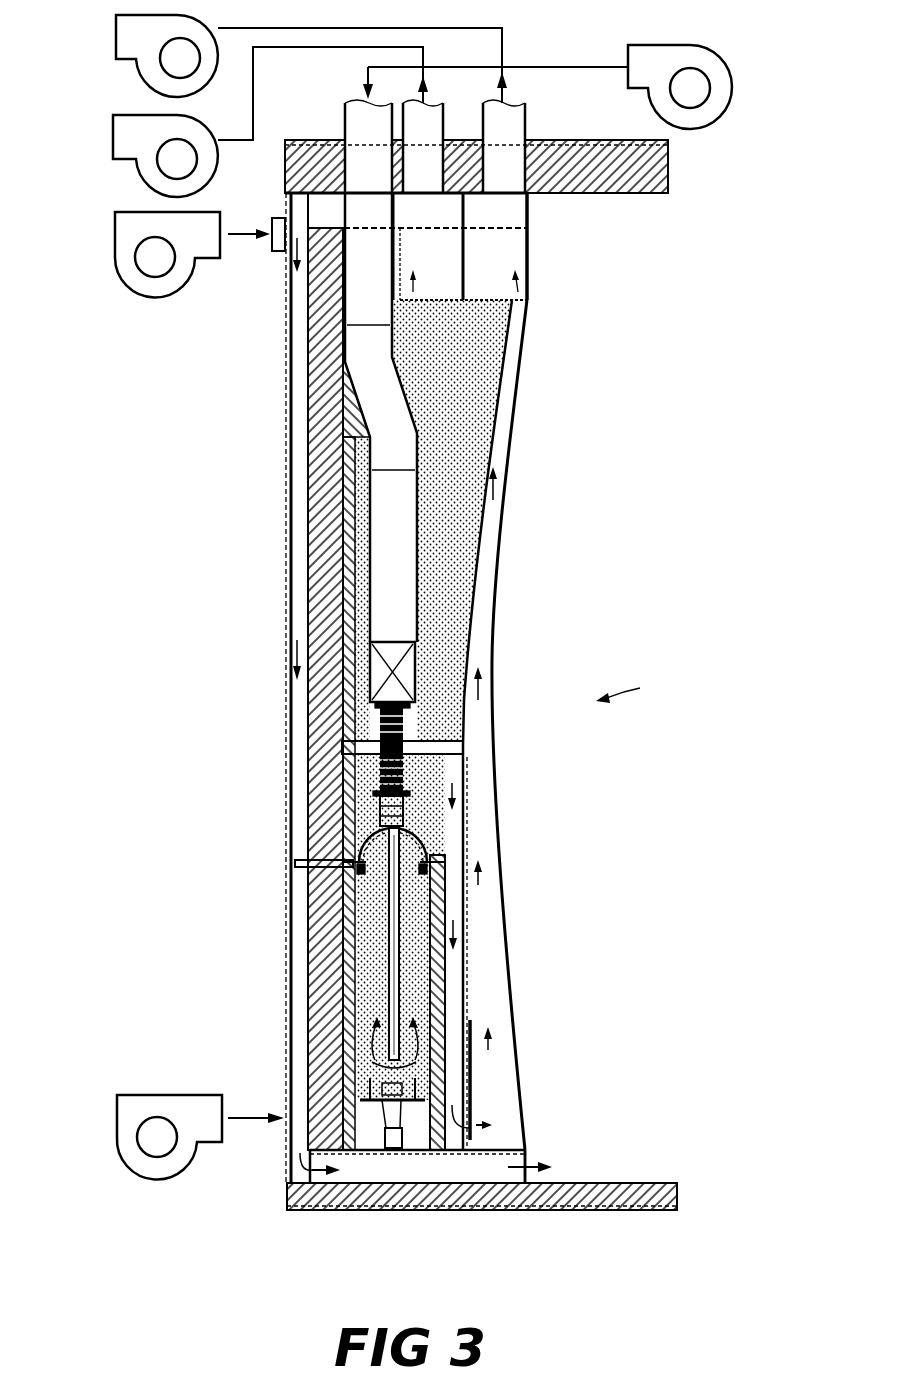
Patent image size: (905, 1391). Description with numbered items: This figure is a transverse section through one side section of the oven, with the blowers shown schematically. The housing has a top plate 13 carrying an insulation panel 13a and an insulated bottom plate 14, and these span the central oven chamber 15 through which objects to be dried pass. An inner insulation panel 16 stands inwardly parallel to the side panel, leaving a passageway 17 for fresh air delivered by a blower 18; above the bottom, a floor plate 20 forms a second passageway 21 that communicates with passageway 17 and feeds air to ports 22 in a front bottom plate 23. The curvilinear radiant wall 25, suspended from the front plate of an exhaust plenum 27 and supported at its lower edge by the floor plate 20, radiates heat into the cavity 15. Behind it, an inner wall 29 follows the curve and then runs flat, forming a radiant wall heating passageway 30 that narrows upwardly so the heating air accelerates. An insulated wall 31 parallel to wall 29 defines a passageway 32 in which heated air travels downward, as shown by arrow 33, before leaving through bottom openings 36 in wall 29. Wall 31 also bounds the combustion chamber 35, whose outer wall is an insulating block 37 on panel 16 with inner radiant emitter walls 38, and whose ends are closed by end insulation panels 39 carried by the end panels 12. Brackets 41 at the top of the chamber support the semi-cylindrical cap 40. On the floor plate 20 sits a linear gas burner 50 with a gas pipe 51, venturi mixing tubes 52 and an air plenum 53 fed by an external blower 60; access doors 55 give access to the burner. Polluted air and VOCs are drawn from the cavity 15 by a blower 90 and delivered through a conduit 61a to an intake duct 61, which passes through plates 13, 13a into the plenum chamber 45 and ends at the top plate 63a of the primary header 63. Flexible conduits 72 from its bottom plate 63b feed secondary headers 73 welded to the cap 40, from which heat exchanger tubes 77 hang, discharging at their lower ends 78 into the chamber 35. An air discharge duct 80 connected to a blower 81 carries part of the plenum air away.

The end panel 12 is at (480, 427).
The top plate 13 is at (552, 140).
The insulation panel 13a is at (552, 195).
The bottom plate 14 is at (603, 1210).
The oven chamber 15 is at (626, 676).
The inner insulation panel 16 is at (317, 400).
The passageway 17 is at (297, 343).
The blower 18 is at (116, 250).
The floor plate 20 is at (500, 1135).
The second passageway 21 is at (452, 1168).
The ports 22 is at (535, 1212).
The front bottom plate 23 is at (530, 1163).
The curvilinear radiant wall 25 is at (497, 627).
The exhaust plenum 27 is at (520, 245).
The inner wall 29 is at (470, 777).
The radiant wall heating passageway 30 is at (482, 803).
The insulated wall 31 is at (466, 910).
The passageway 32 is at (468, 983).
The arrow 33 is at (454, 942).
The combustion chamber 35 is at (375, 965).
The bottom openings 36 is at (518, 1140).
The insulating block 37 is at (345, 1005).
The inner radiant emitter walls 38 is at (355, 1035).
The end insulation panel 39 is at (388, 905).
The combustion chamber cap 40 is at (306, 838).
The brackets 41 is at (300, 868).
The plenum chamber 45 is at (483, 373).
The linear gas burner 50 is at (380, 1080).
The gas pipe 51 is at (300, 1160).
The venturi mixing tubes 52 is at (377, 1140).
The air plenum 53 is at (300, 1112).
The access doors 55 is at (472, 1040).
The external blower 60 is at (117, 1128).
The air intake duct 61 is at (348, 117).
The conduit 61a is at (586, 67).
The primary header 63 is at (303, 657).
The top plate 63a is at (395, 642).
The bottom plate 63b is at (393, 678).
The flexible conduits 72 is at (318, 703).
The secondary header 73 is at (405, 807).
The heat exchanger tubes 77 is at (390, 935).
The lower discharge end 78 is at (380, 1060).
The air discharge duct 80 is at (432, 112).
The blower 81 is at (118, 33).
The blower 90 is at (720, 58).